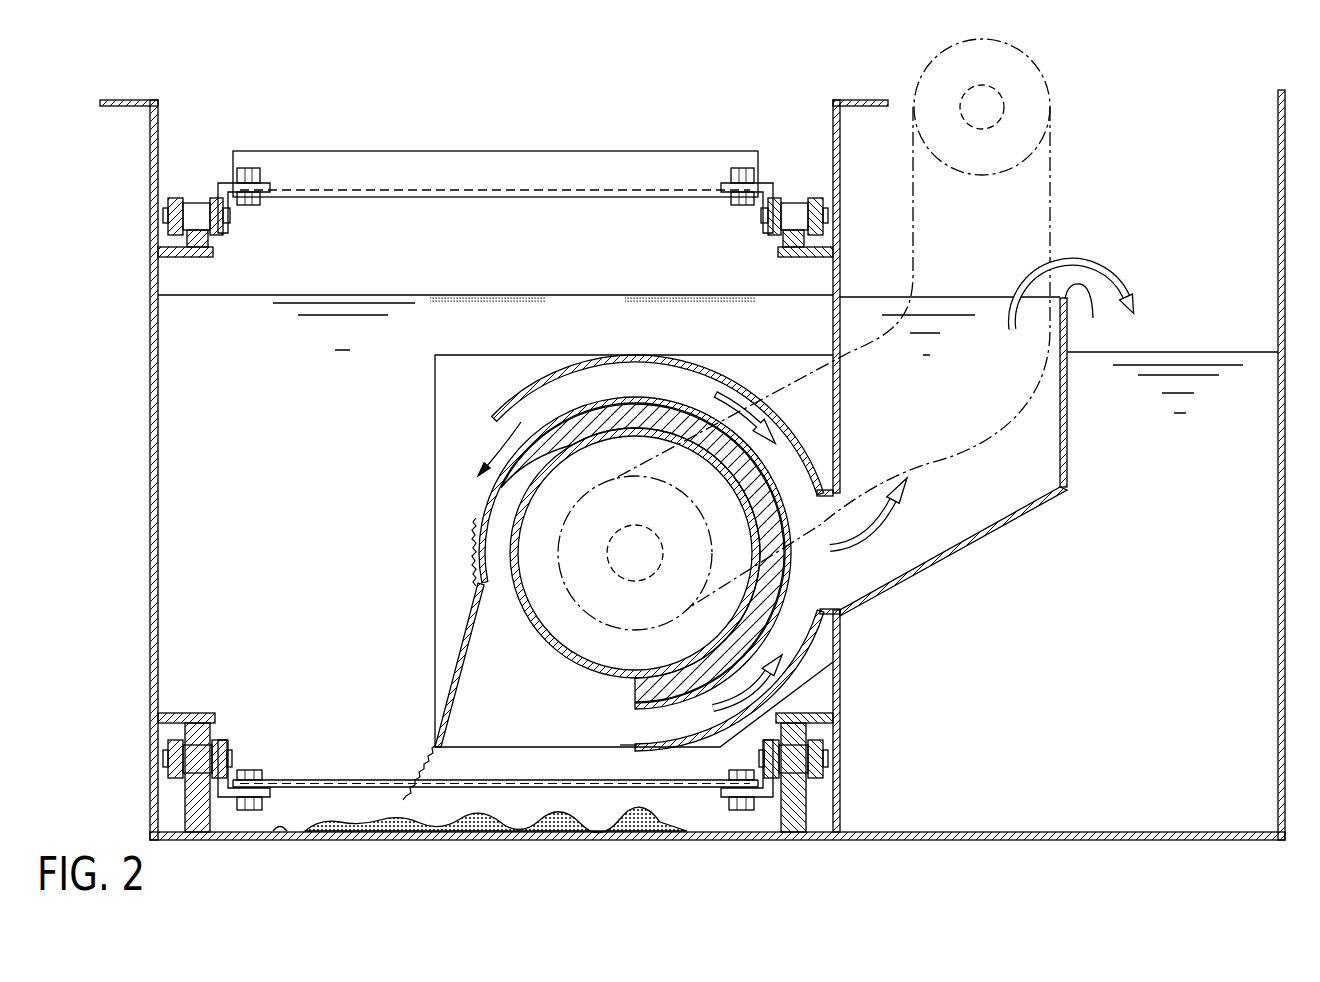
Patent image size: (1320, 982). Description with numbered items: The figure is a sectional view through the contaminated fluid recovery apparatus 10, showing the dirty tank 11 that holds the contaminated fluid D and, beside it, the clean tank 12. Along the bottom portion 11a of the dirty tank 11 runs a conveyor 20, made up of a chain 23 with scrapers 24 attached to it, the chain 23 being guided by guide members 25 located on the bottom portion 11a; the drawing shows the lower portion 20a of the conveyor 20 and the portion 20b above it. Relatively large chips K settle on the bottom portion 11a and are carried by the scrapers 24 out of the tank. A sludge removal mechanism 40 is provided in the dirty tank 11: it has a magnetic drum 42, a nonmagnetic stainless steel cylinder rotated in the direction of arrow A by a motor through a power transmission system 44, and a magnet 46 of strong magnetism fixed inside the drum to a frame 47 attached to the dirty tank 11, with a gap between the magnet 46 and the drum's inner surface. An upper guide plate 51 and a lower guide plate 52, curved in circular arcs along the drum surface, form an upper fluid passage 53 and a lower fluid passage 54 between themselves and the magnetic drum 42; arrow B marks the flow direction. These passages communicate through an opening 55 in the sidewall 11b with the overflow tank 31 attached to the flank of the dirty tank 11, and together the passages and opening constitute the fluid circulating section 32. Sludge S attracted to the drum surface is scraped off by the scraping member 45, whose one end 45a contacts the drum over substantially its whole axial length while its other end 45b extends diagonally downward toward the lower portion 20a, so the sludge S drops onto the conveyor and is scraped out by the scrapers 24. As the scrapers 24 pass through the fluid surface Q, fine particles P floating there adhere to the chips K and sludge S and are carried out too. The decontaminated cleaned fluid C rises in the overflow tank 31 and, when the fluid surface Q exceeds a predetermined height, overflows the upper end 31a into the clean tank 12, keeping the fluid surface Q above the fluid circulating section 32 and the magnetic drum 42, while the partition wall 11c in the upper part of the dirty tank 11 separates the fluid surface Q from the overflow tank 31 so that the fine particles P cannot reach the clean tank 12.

The contaminated fluid recovery apparatus 10 is at (656, 109).
The dirty tank 11 is at (150, 437).
The bottom portion 11a is at (268, 832).
The sidewall 11b is at (843, 636).
The partition wall 11c is at (842, 330).
The clean tank 12 is at (1093, 653).
The conveyor 20 is at (495, 479).
The lower portion 20a is at (328, 778).
The upper guide plate 20b is at (388, 198).
The chain 23 is at (499, 490).
The scrapers 24 is at (572, 162).
The guide members 25 is at (190, 803).
The overflow tank 31 is at (985, 450).
The upper end 31a is at (1089, 315).
The fluid circulating section 32 is at (599, 392).
The sludge removal mechanism 40 is at (460, 602).
The magnetic drum 42 is at (546, 680).
The power transmission system 44 is at (1052, 122).
The scraping member 45 is at (427, 657).
The one end 45a is at (470, 578).
The other end 45b is at (432, 745).
The magnet 46 is at (572, 432).
The frame 47 is at (433, 447).
The upper guide plate 51 is at (735, 385).
The lower guide plate 52 is at (694, 748).
The upper fluid passage 53 is at (662, 404).
The lower fluid passage 54 is at (640, 728).
The opening 55 is at (882, 582).
The sludge S is at (470, 548).
The chips K is at (470, 818).
The fine particles P is at (495, 298).
The fluid surface Q is at (583, 297).
The rotation direction of the magnetic drum A is at (492, 441).
The fluid flow direction B is at (1085, 262).
The cleaned fluid C is at (915, 403).
The contaminated fluid D is at (270, 470).